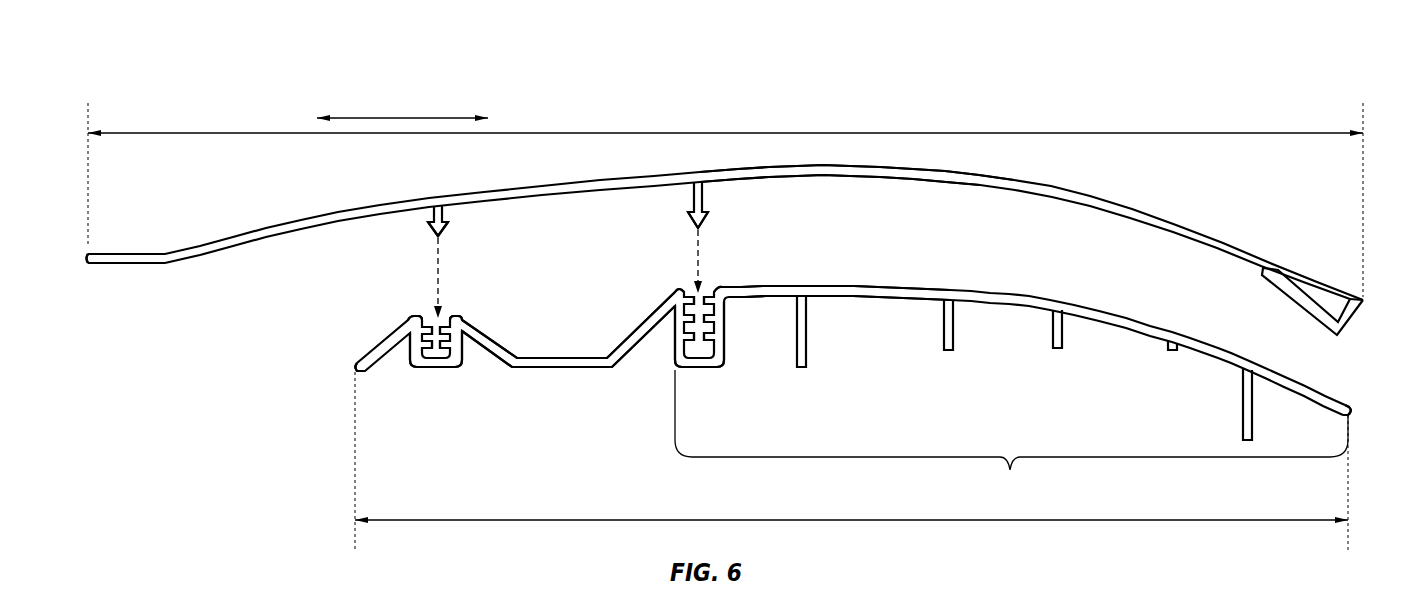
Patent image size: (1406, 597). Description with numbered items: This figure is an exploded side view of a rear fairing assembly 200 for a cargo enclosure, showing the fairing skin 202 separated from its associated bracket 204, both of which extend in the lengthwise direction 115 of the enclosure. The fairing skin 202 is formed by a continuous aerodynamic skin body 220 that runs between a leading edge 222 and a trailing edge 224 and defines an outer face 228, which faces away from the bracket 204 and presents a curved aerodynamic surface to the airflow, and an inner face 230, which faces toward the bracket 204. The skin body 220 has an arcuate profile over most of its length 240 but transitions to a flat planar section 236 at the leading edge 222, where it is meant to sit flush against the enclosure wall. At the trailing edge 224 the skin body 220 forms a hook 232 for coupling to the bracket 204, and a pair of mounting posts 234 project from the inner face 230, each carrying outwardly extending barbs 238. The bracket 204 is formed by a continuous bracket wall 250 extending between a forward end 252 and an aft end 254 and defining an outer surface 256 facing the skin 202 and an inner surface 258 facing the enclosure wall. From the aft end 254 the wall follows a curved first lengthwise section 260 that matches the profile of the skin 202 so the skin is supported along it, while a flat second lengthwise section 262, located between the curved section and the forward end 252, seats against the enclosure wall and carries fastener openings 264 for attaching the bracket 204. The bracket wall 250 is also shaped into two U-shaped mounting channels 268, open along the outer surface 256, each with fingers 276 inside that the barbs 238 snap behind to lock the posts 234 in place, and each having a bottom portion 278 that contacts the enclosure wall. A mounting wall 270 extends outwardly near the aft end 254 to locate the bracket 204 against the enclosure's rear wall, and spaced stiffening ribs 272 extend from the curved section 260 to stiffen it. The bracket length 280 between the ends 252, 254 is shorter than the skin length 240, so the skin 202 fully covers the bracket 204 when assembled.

The lengthwise direction 115 is at (407, 118).
The fairing assembly 200 is at (1252, 100).
The fairing skin 202 is at (1280, 186).
The bracket 204 is at (1348, 372).
The skin body 220 is at (1082, 184).
The leading edge 222 is at (86, 261).
The trailing edge 224 is at (1366, 298).
The outer face 228 is at (912, 171).
The inner face 230 is at (845, 182).
The hook 232 is at (1303, 301).
The mounting posts 234 is at (443, 211).
The planar section 236 is at (118, 264).
The barbs 238 is at (430, 224).
The length of the fairing skin 240 is at (657, 133).
The bracket wall 250 is at (876, 278).
The forward end 252 is at (356, 364).
The aft end 254 is at (1352, 411).
The outer surface 256 is at (833, 287).
The inner surface 258 is at (862, 299).
The first lengthwise section 260 is at (1011, 443).
The second lengthwise section 262 is at (607, 380).
The fastener openings 264 is at (545, 358).
The mounting channels 268 is at (428, 352).
The mounting wall 270 is at (1242, 415).
The stiffening ribs 272 is at (808, 349).
The fingers 276 is at (428, 316).
The bottom portion 278 is at (438, 368).
The length of the bracket 280 is at (705, 520).